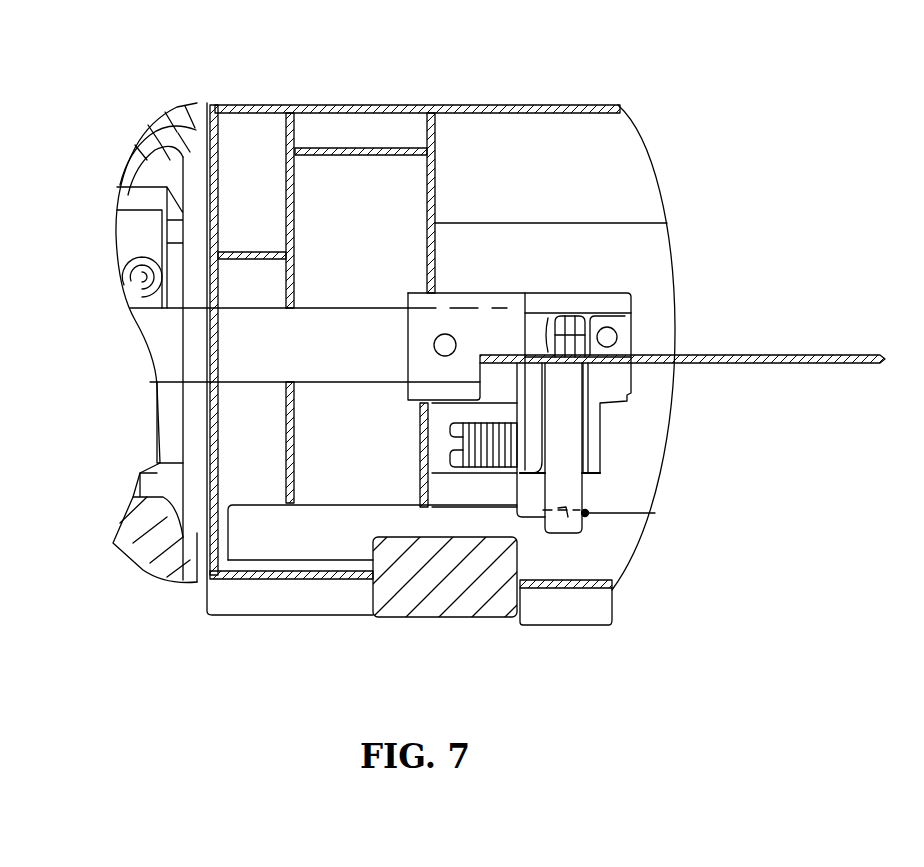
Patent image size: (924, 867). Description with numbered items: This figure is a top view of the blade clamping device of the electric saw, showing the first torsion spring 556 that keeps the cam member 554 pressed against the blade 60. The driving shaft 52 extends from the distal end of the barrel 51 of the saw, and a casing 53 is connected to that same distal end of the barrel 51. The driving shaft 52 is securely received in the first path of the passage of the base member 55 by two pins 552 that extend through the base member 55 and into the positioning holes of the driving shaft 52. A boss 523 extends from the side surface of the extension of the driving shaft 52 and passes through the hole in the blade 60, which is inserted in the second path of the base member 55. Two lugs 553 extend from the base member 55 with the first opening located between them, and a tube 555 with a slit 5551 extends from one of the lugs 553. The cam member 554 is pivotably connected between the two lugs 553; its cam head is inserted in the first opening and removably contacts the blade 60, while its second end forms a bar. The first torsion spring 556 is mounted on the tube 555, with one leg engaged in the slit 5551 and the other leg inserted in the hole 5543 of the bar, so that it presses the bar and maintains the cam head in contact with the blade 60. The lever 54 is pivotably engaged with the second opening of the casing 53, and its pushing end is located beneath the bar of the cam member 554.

The barrel 51 is at (153, 118).
The driving shaft 52 is at (318, 345).
The casing 53 is at (542, 107).
The lever 54 is at (450, 583).
The base member 55 is at (500, 293).
The boss 523 is at (577, 314).
The pins 552 is at (611, 336).
The lugs 553 is at (605, 448).
The cam member 554 is at (563, 482).
The hole 5543 is at (565, 520).
The tube 555 is at (450, 423).
The slit 5551 is at (450, 443).
The first torsion spring 556 is at (528, 515).
The blade 60 is at (837, 357).